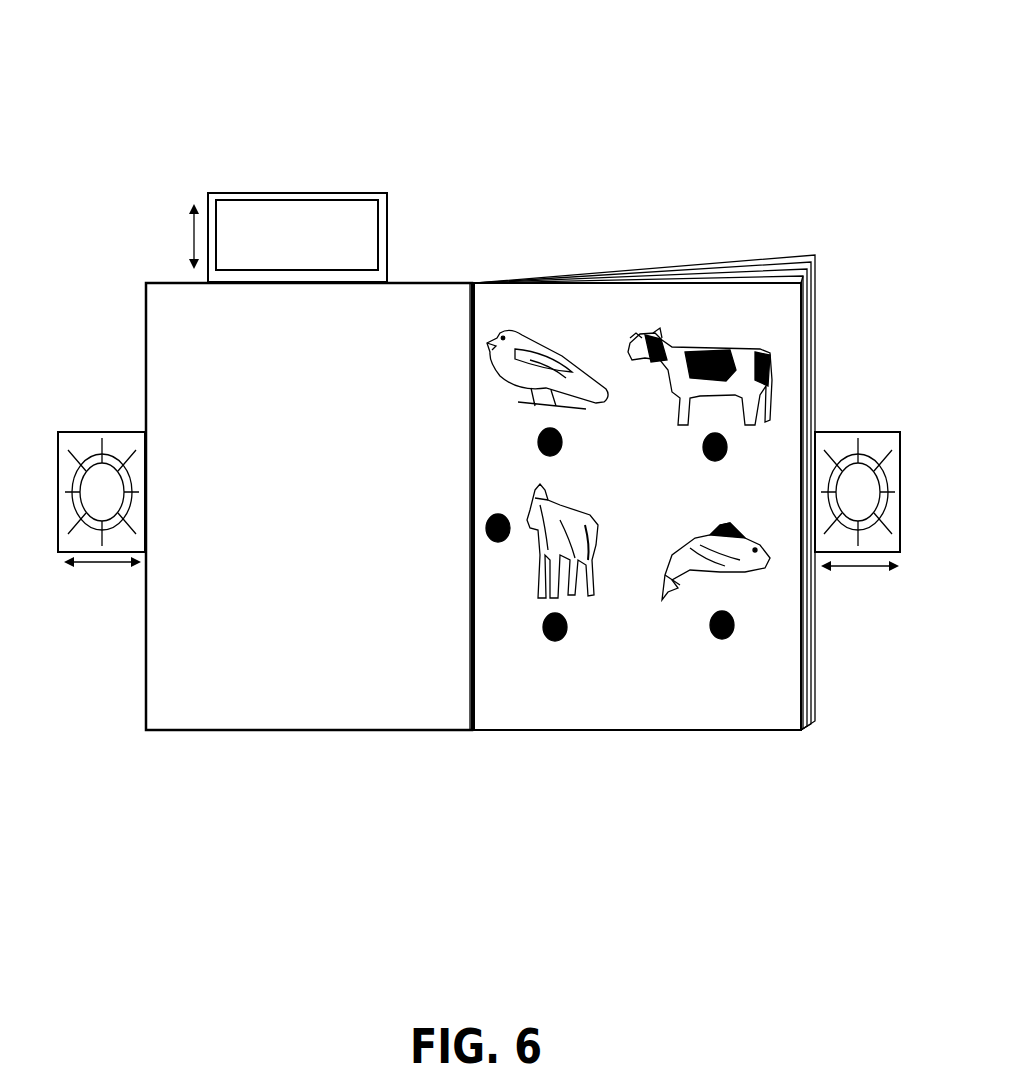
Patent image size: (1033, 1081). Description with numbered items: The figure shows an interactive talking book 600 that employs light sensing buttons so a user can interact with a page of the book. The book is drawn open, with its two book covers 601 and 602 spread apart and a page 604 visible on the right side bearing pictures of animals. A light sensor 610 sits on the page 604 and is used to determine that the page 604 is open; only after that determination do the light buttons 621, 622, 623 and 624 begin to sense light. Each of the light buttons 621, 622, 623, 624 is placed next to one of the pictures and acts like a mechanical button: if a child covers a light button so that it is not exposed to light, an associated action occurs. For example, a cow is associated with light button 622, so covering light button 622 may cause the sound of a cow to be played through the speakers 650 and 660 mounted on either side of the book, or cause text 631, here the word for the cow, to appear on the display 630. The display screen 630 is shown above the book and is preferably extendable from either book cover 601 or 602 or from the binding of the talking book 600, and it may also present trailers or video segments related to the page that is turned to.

The interactive talking book 600 is at (248, 39).
The book cover 601 is at (147, 280).
The book cover 602 is at (797, 255).
The page 604 is at (585, 305).
The light sensor 610 is at (490, 519).
The light button 621 is at (562, 445).
The light button 622 is at (703, 447).
The light button 623 is at (544, 627).
The light button 624 is at (710, 625).
The display screen 630 is at (368, 215).
The text 631 is at (265, 245).
The speaker 650 is at (92, 432).
The speaker 660 is at (862, 432).